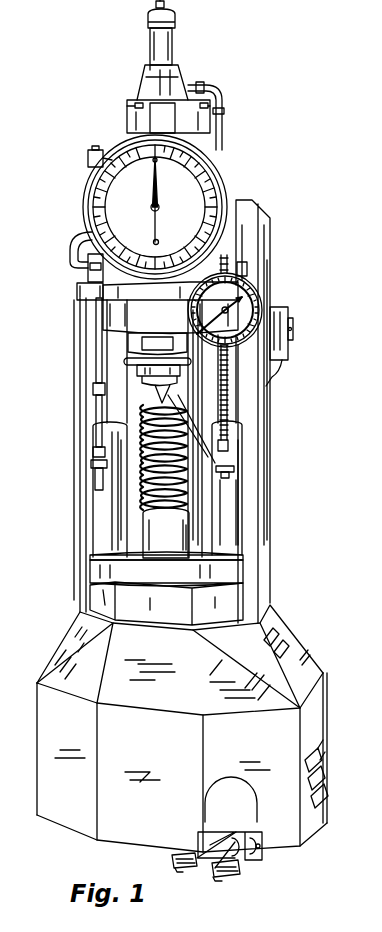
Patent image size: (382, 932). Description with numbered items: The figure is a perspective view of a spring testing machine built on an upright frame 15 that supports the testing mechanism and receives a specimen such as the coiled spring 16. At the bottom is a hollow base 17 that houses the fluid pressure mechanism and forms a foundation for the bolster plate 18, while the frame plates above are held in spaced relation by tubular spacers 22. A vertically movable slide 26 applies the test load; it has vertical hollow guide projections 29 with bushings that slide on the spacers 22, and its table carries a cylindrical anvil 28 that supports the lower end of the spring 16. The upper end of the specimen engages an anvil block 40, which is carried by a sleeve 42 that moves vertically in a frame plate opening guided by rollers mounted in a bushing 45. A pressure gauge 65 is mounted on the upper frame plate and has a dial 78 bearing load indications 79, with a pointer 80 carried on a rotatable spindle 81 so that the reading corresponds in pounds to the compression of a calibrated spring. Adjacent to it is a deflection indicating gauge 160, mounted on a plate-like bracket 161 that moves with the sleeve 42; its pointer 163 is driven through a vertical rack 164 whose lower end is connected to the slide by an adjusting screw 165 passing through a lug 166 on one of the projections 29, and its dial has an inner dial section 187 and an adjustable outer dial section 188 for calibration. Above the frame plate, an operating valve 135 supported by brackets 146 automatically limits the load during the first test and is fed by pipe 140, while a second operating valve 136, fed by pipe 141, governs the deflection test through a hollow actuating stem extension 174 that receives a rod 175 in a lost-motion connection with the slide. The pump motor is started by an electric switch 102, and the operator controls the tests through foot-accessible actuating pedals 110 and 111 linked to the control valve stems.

The operating valve 135 is at (173, 48).
The brackets 146 is at (127, 113).
The pipe 140 is at (220, 126).
The dial 78 is at (153, 165).
The operating valve 136 is at (88, 163).
The gauge 65 is at (228, 162).
The pointer 80 is at (157, 173).
The load indications 79 is at (196, 198).
The spindle 81 is at (158, 214).
The pipe 141 is at (70, 258).
The inner dial section 187 is at (244, 276).
The outer dial section 188 is at (247, 289).
The pointer 163 is at (245, 294).
The deflection indicating gauge 160 is at (252, 298).
The plate-like bracket 161 is at (77, 293).
The electric switch 102 is at (293, 329).
The bushing 45 is at (153, 338).
The hollow actuating stem extension 174 is at (96, 353).
The sleeve 42 is at (124, 360).
The vertical rack 164 is at (221, 376).
The spacers 22 is at (107, 402).
The anvil block 40 is at (150, 384).
The rod 175 is at (96, 420).
The adjusting screw 165 is at (228, 446).
The lug 166 is at (234, 469).
The coiled spring 16 is at (143, 488).
The upright frame 15 is at (263, 490).
The anvil 28 is at (150, 537).
The vertical hollow guide projections 29 is at (233, 545).
The slide 26 is at (233, 573).
The bolster plate 18 is at (233, 610).
The hollow base 17 is at (194, 760).
The actuating pedal 110 is at (185, 870).
The actuating pedal 111 is at (237, 877).